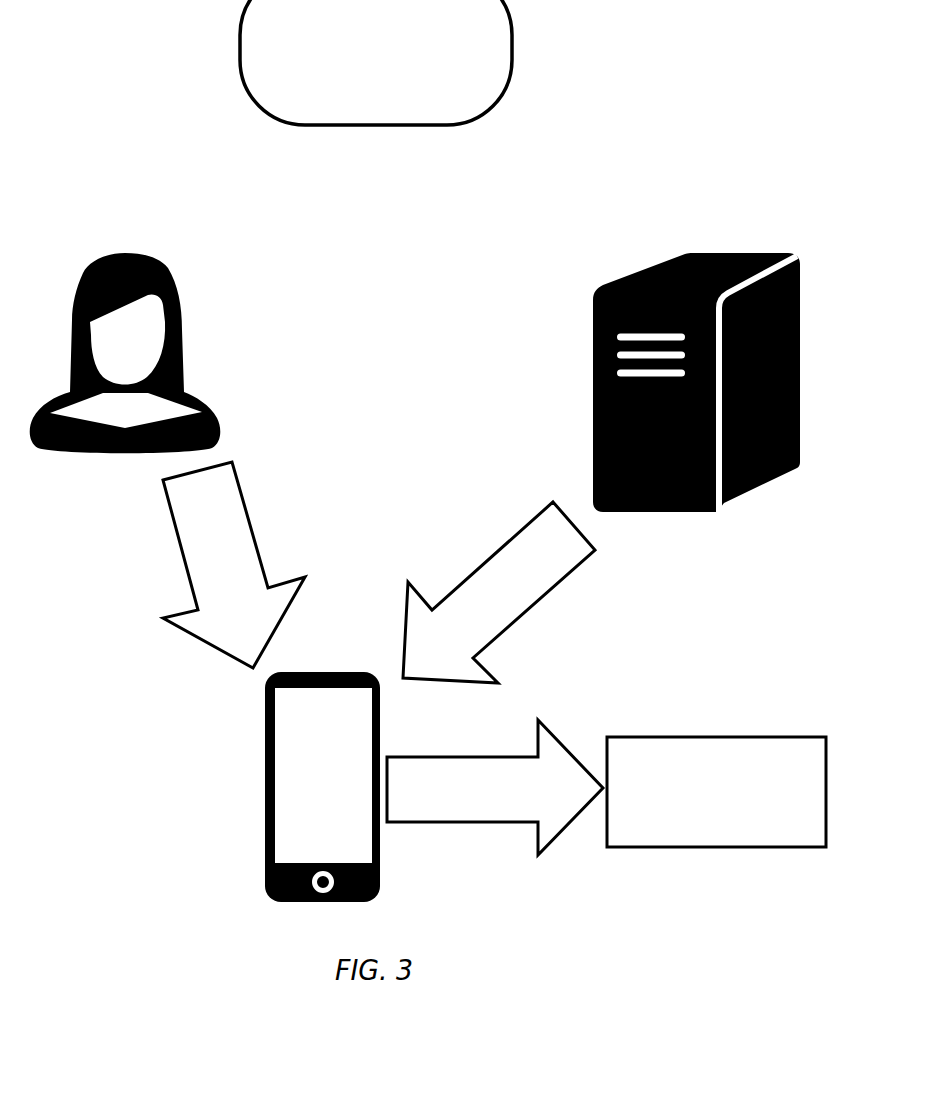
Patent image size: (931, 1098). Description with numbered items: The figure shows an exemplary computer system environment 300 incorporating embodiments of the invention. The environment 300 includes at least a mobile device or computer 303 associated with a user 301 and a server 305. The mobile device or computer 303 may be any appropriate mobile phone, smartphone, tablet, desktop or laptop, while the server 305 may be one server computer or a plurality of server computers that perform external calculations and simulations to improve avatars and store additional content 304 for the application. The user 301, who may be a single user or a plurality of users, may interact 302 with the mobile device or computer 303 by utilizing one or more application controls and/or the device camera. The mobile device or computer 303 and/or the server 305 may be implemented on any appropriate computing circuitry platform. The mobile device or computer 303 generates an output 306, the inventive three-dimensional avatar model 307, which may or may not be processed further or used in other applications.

The computer system environment 300 is at (376, 62).
The user 301 is at (125, 338).
The user interaction 302 is at (234, 565).
The mobile device or computer 303 is at (322, 771).
The additional content for the application 304 is at (499, 592).
The server 305 is at (696, 374).
The output 306 is at (495, 787).
The avatar model 307 is at (716, 792).